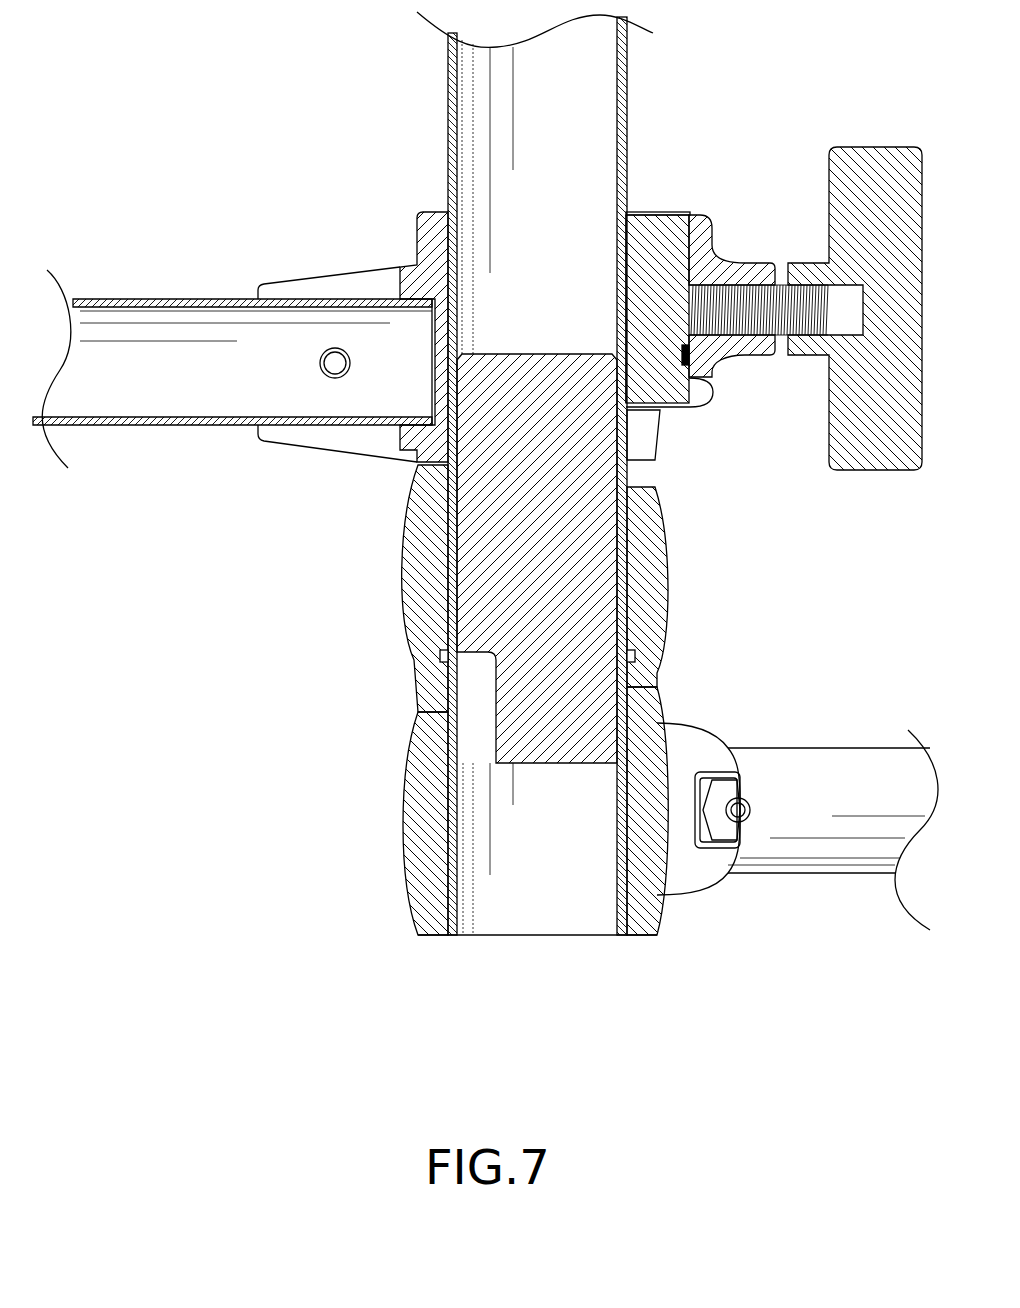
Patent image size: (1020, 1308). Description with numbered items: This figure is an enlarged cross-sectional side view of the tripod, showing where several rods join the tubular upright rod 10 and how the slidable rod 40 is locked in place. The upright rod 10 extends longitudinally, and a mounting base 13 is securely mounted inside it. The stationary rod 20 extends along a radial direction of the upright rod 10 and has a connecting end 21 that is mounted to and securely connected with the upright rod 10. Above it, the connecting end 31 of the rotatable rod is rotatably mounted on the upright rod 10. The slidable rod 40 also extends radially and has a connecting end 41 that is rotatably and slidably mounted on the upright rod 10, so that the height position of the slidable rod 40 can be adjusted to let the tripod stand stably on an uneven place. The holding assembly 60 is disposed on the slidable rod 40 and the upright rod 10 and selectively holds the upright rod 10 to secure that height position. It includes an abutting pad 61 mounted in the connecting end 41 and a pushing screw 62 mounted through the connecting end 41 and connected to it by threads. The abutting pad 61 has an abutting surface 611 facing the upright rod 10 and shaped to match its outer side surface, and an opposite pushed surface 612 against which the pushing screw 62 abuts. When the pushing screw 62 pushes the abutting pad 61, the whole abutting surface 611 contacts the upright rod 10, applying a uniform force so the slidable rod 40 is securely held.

The upright rod 10 is at (451, 122).
The mounting base 13 is at (600, 568).
The stationary rod 20 is at (808, 862).
The connecting end 21 is at (418, 845).
The connecting end 31 is at (418, 605).
The slidable rod 40 is at (212, 410).
The connecting end 41 is at (418, 452).
The holding assembly 60 is at (797, 165).
The abutting pad 61 is at (650, 224).
The abutting surface 611 is at (623, 266).
The pushed surface 612 is at (717, 250).
The pushing screw 62 is at (829, 367).